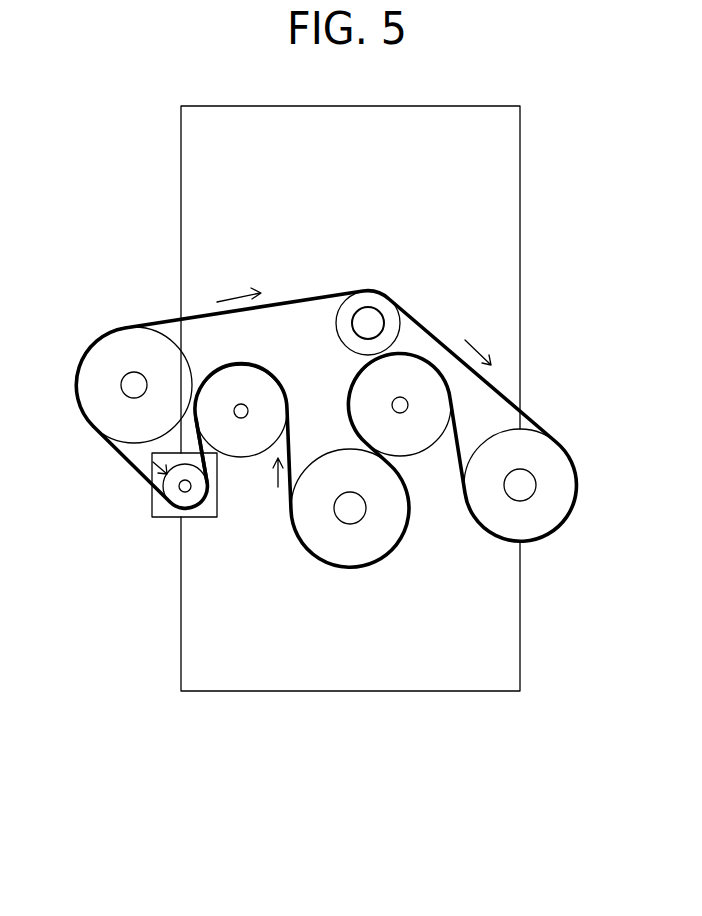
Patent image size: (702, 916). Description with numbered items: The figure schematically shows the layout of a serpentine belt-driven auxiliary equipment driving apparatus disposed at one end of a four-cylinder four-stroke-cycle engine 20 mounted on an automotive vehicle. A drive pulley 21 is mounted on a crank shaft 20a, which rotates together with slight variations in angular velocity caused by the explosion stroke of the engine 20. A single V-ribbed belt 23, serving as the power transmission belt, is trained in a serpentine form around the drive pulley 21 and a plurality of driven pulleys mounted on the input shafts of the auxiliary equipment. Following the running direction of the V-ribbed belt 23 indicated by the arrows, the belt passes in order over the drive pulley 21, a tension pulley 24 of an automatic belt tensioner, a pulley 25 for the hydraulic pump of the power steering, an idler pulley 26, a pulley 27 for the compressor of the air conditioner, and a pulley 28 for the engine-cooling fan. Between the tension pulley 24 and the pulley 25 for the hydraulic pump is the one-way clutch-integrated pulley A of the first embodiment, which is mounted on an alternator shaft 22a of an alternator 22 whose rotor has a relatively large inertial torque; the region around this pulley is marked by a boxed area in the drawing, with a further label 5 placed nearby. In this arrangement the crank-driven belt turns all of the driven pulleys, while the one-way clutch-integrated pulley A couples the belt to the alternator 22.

The engine 20 is at (370, 158).
The crank shaft 20a is at (353, 523).
The drive pulley 21 is at (336, 457).
The alternator 22 is at (153, 508).
The alternator shaft 22a is at (180, 491).
The V-ribbed belt 23 is at (330, 296).
The tension pulley 24 is at (233, 453).
The pulley for a hydraulic pump 25 is at (168, 330).
The idler pulley 26 is at (401, 323).
The pulley for a compressor 27 is at (527, 431).
The pulley for an engine-cooling fan 28 is at (423, 450).
The belt portion 5 is at (148, 486).
The one-way clutch-integrated pulley A is at (152, 470).